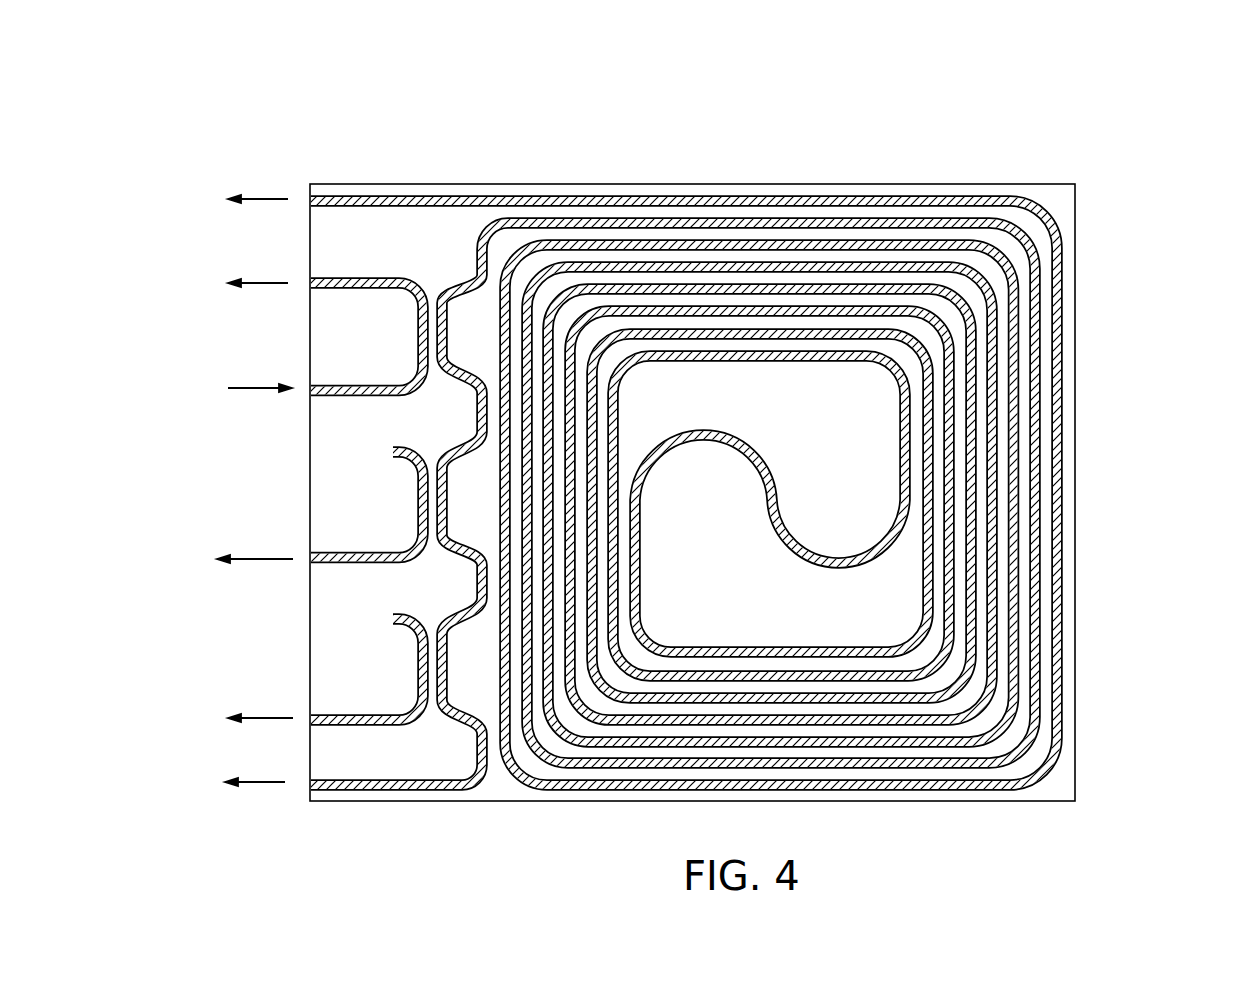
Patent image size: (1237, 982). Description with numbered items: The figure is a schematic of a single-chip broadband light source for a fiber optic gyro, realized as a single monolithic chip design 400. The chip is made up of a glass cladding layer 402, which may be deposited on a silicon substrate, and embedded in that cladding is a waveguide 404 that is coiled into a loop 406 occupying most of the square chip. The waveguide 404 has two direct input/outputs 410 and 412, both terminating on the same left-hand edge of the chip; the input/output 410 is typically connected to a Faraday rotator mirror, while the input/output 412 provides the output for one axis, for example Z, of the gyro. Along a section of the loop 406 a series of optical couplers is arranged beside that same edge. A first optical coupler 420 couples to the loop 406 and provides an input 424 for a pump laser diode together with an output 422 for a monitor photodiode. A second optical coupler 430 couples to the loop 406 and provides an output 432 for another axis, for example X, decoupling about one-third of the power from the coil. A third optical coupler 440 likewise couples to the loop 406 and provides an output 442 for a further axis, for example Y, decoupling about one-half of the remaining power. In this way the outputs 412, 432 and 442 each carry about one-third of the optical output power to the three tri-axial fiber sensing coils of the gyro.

The single monolithic chip design 400 is at (765, 421).
The glass cladding layer 402 is at (836, 110).
The waveguide 404 is at (821, 427).
The loop 406 is at (1062, 468).
The input/output 410 is at (310, 197).
The input/output 412 is at (307, 790).
The first optical coupler 420 is at (295, 333).
The output for a monitor photodiode 422 is at (327, 277).
The input for a pump laser diode 424 is at (330, 393).
The second optical coupler 430 is at (302, 530).
The output 432 is at (340, 560).
The third optical coupler 440 is at (309, 693).
The output 442 is at (330, 718).